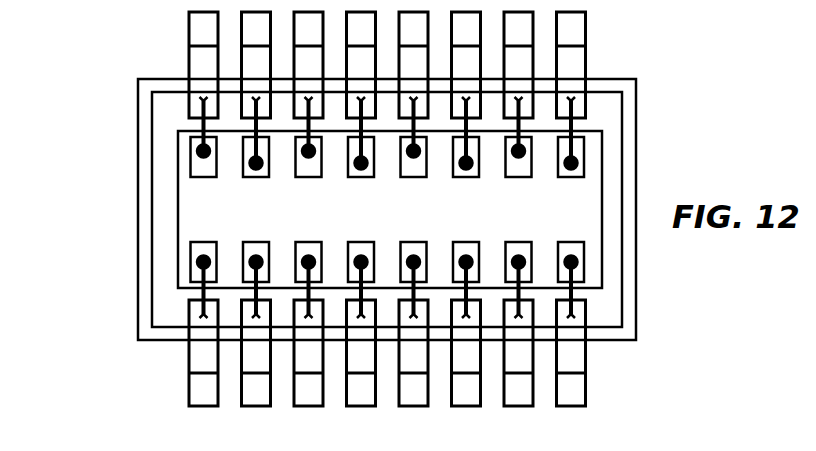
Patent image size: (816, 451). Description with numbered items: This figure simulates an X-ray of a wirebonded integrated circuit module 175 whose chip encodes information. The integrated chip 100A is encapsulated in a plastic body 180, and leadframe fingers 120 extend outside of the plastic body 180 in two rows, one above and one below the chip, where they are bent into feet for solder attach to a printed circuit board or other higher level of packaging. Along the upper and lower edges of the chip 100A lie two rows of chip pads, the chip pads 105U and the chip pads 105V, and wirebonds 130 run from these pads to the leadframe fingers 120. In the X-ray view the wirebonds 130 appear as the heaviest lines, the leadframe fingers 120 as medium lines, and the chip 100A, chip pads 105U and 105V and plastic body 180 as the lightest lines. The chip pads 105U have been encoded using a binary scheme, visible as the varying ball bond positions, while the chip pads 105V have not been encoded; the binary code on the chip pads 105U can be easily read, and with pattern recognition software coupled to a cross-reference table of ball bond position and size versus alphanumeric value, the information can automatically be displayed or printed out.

The wirebonded integrated circuit module 175 is at (158, 55).
The wirebonds 130 is at (185, 124).
The leadframe fingers 120 is at (643, 13).
The chip 100A is at (226, 219).
The chip pads 105V is at (583, 235).
The chip pads 105U is at (191, 185).
The plastic body 180 is at (618, 322).